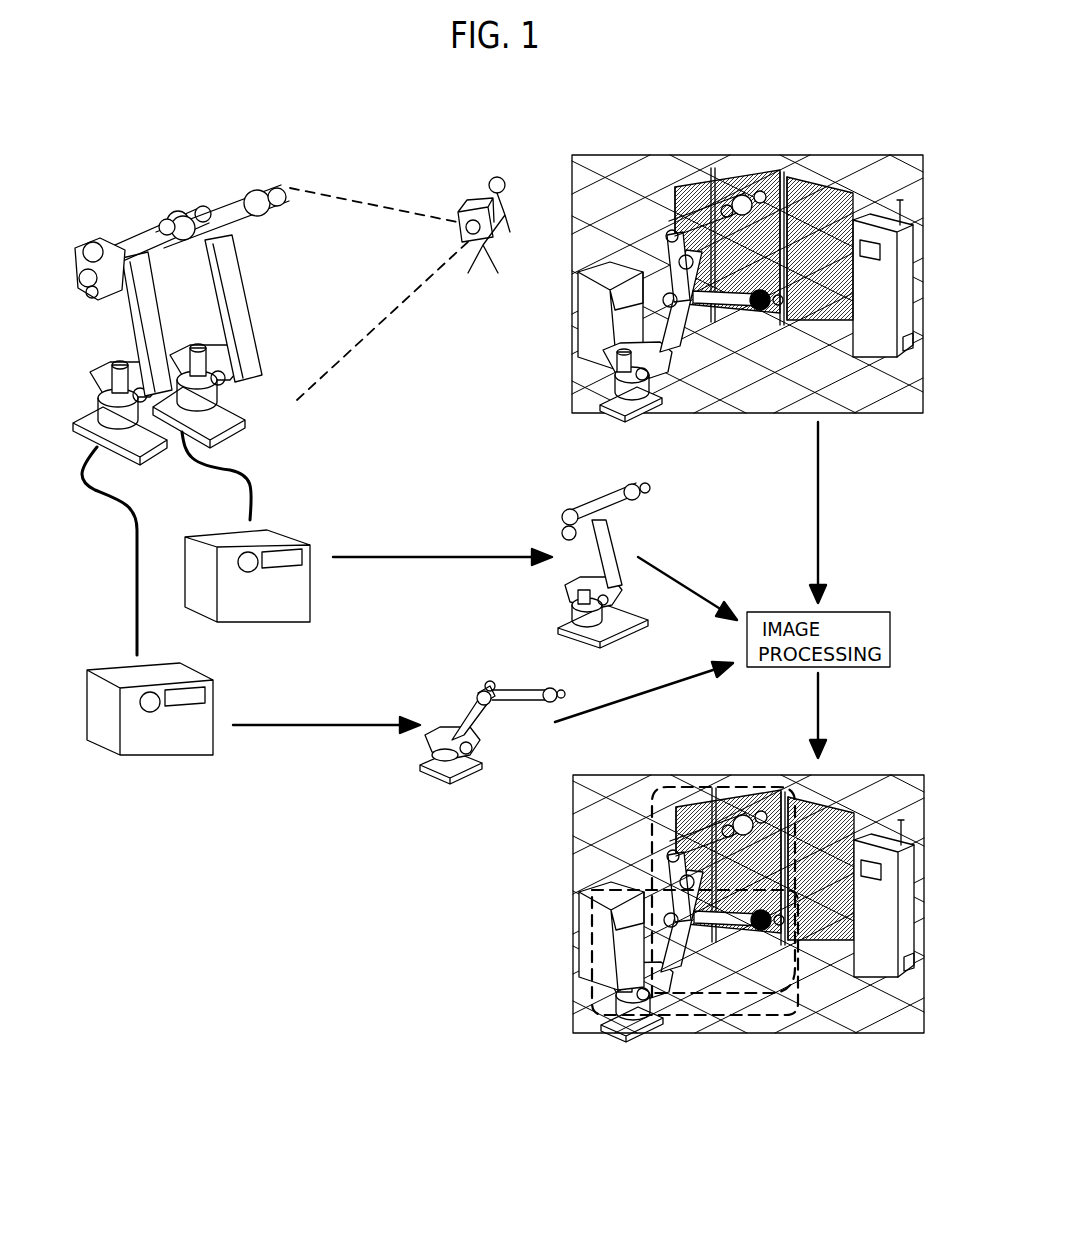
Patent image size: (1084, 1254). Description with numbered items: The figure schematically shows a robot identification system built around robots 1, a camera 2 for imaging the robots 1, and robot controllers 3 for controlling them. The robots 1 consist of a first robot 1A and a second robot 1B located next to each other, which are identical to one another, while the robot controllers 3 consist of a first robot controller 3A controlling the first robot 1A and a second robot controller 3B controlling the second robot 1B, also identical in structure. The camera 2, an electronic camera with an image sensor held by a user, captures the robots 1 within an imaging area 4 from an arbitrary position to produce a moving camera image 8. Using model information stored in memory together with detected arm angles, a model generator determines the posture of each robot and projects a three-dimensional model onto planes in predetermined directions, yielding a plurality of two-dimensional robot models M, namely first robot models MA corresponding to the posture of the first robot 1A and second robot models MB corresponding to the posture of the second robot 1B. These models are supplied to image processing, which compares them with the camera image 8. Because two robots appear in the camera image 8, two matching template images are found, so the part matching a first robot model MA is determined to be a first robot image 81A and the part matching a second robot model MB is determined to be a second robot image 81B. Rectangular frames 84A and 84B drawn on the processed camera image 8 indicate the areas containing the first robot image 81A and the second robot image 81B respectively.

The robot 1 is at (282, 128).
The first robot 1A is at (130, 222).
The second robot 1B is at (235, 186).
The camera 2 is at (467, 240).
The robot controller 3 is at (304, 497).
The first robot controller 3A is at (168, 758).
The second robot controller 3B is at (287, 540).
The imaging area 4 is at (363, 228).
The camera image 8 is at (632, 167).
The first robot image 81A is at (708, 363).
The second robot image 81B is at (705, 185).
The rectangular frame 84A is at (765, 1024).
The rectangular frame 84B is at (651, 812).
The two-dimensional robot model M is at (614, 480).
The first robot model MA is at (425, 750).
The second robot model MB is at (573, 603).